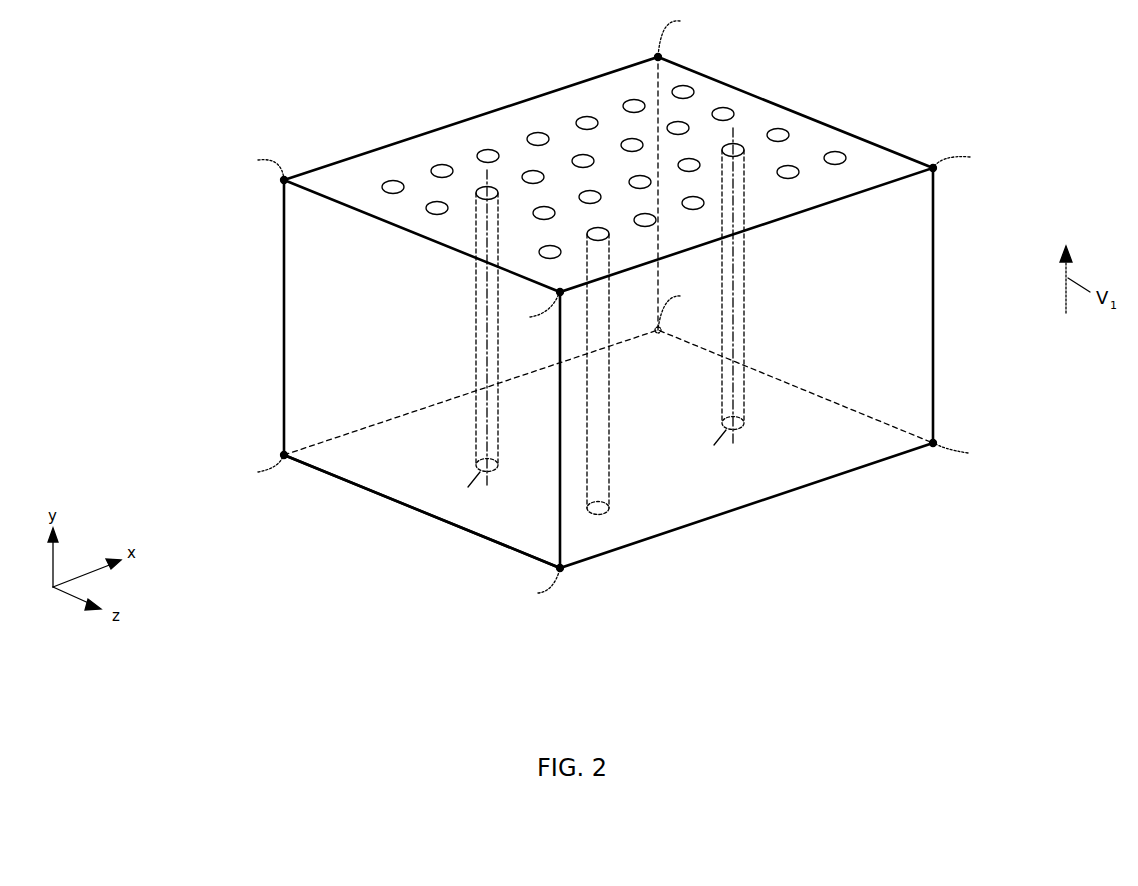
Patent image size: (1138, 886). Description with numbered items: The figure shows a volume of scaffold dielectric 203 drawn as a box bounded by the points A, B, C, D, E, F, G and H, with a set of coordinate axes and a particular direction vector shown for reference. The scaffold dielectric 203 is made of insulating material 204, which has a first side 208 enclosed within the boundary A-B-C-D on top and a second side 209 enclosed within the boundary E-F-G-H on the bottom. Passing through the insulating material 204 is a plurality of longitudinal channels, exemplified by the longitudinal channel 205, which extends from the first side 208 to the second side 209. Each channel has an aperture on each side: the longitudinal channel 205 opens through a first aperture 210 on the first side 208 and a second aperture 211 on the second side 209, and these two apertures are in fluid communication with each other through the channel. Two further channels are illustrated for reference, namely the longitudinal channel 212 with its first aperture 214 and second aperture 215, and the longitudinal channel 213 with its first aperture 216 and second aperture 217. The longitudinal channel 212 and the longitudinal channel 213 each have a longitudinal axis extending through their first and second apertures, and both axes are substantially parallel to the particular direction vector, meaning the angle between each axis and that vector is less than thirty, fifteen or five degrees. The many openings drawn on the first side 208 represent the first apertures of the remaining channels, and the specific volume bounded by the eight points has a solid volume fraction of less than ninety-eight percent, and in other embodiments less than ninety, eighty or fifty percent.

The scaffold dielectric 203 is at (162, 174).
The insulating material 204 is at (345, 330).
The longitudinal channel 205 is at (600, 413).
The first side 208 is at (403, 162).
The second side 209 is at (402, 488).
The first aperture 210 is at (598, 230).
The second aperture 211 is at (609, 510).
The longitudinal channel 212 is at (484, 323).
The longitudinal channel 213 is at (734, 275).
The first aperture 214 is at (489, 183).
The second aperture 215 is at (496, 468).
The first aperture 216 is at (733, 140).
The second aperture 217 is at (742, 426).